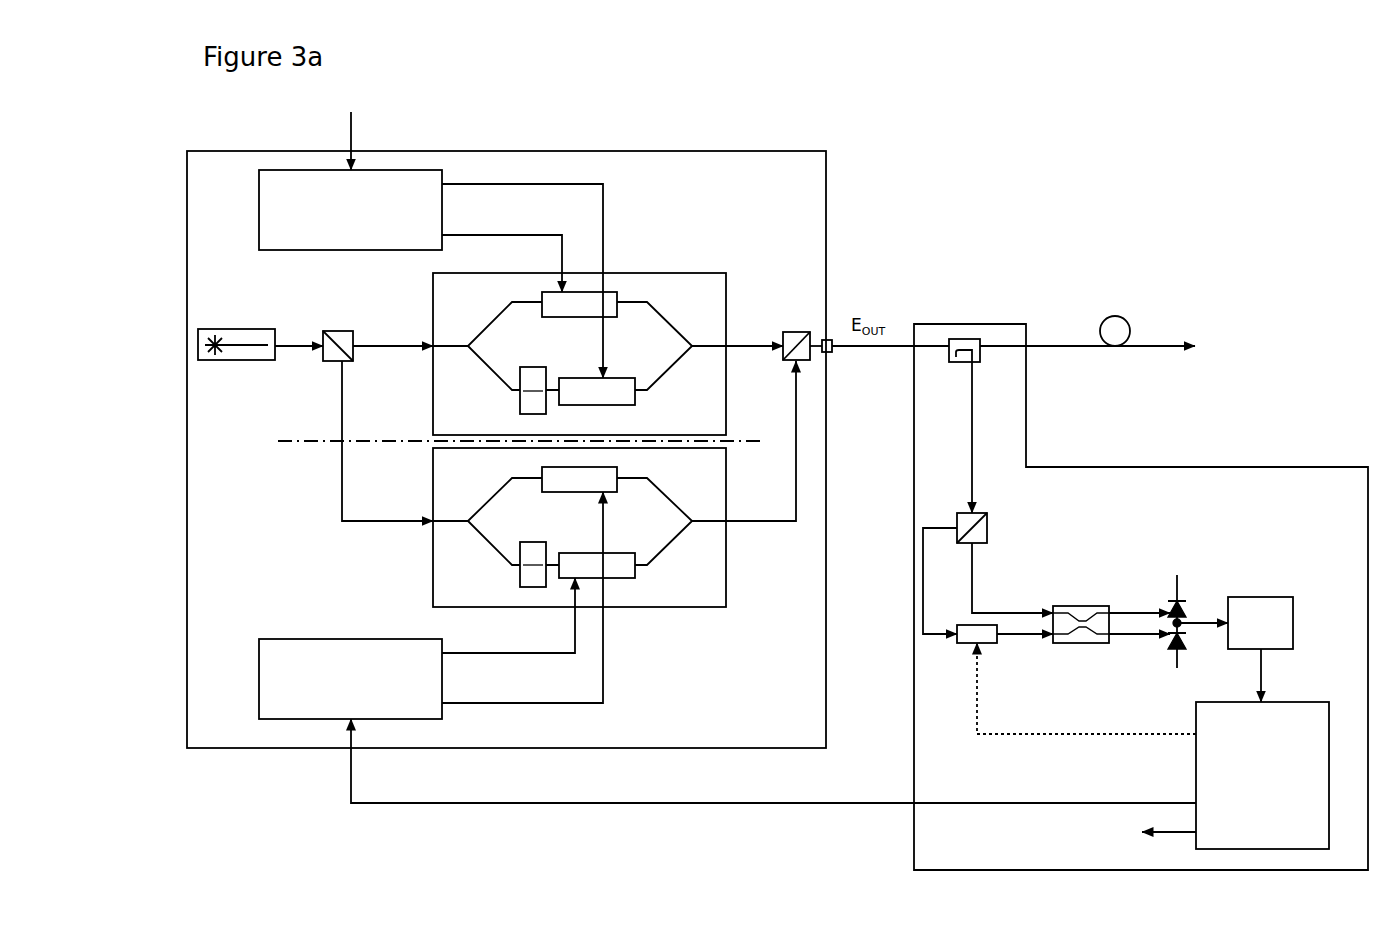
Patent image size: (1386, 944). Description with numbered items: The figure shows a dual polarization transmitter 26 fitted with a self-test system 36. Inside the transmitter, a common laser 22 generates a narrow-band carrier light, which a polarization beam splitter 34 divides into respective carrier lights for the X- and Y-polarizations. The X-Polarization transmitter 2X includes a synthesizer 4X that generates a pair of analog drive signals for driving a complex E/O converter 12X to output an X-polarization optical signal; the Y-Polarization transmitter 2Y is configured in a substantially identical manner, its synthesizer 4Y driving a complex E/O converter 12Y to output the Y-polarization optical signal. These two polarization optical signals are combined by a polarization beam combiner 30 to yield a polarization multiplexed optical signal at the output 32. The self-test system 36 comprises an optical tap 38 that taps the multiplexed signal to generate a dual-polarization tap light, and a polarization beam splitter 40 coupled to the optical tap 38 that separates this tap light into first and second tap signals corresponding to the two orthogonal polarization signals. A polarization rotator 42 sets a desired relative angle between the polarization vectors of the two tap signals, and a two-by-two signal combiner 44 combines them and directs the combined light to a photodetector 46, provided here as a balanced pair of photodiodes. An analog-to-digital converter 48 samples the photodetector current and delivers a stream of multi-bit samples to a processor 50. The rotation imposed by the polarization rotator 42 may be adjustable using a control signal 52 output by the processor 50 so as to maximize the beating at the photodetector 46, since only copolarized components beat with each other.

The X-Polarization transmitter 2X is at (737, 206).
The Y-Polarization transmitter 2Y is at (748, 672).
The synthesizer 4X is at (350, 210).
The synthesizer 4Y is at (350, 679).
The complex E/O converter 12X is at (696, 273).
The complex E/O converter 12Y is at (650, 608).
The laser 22 is at (233, 329).
The optical transmitter 26 is at (796, 151).
The polarization beam combiner 30 is at (797, 332).
The output 32 is at (832, 352).
The polarization beam splitter 34 is at (340, 331).
The self-test system 36 is at (1212, 467).
The optical tap 38 is at (975, 339).
The polarization beam splitter 40 is at (987, 527).
The polarization rotator 42 is at (965, 645).
The 2×2 signal combiner 44 is at (1080, 606).
The photodetector 46 is at (1192, 596).
The Analog-to-Digital Converter 48 is at (1290, 597).
The processor 50 is at (1262, 775).
The control signal 52 is at (1070, 734).